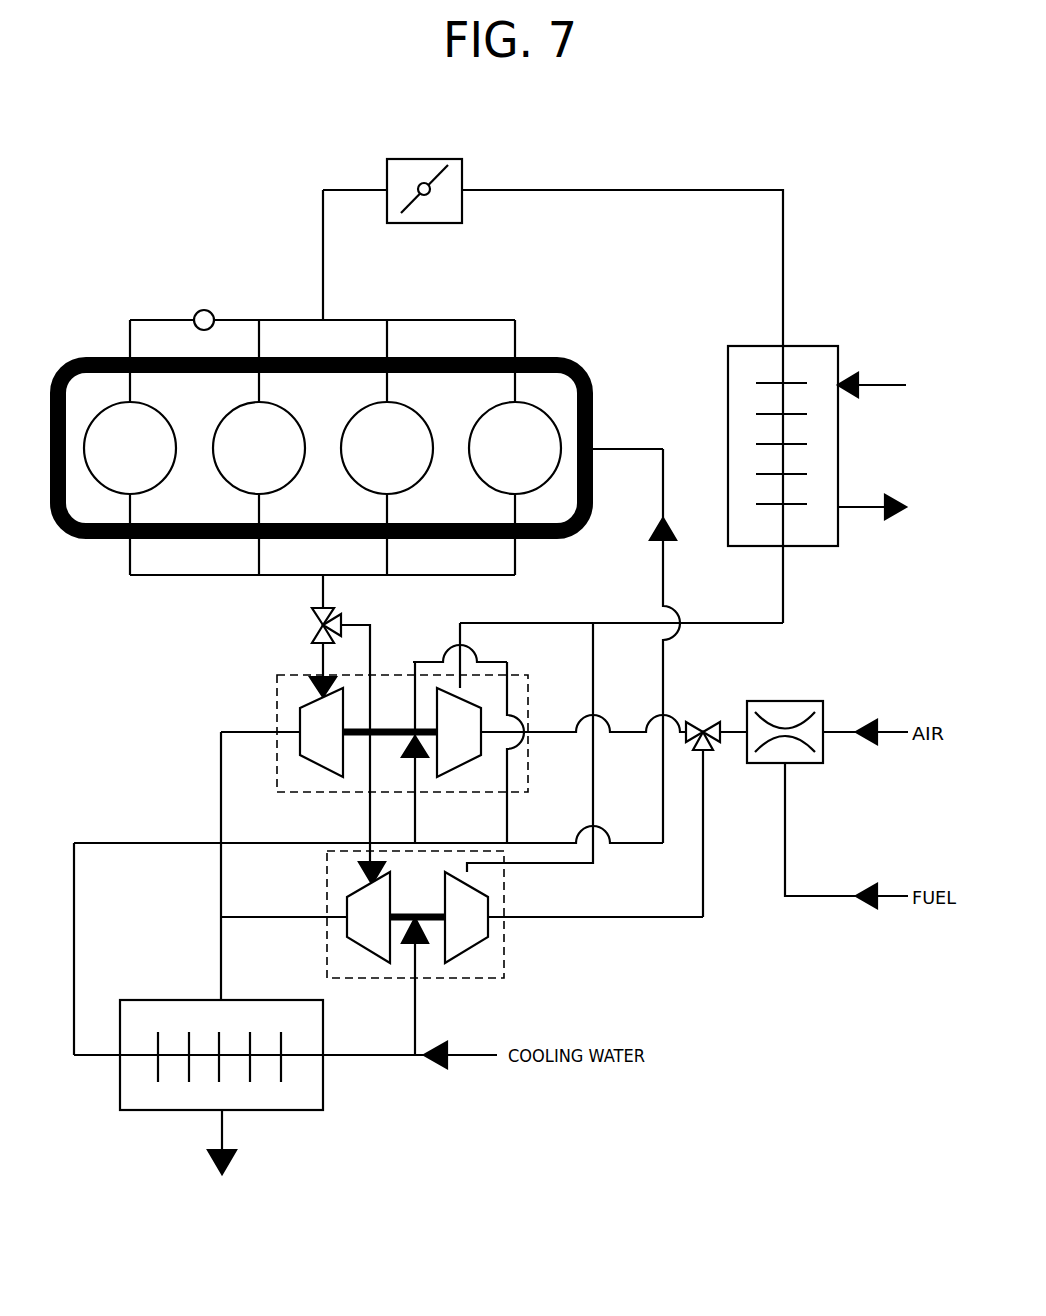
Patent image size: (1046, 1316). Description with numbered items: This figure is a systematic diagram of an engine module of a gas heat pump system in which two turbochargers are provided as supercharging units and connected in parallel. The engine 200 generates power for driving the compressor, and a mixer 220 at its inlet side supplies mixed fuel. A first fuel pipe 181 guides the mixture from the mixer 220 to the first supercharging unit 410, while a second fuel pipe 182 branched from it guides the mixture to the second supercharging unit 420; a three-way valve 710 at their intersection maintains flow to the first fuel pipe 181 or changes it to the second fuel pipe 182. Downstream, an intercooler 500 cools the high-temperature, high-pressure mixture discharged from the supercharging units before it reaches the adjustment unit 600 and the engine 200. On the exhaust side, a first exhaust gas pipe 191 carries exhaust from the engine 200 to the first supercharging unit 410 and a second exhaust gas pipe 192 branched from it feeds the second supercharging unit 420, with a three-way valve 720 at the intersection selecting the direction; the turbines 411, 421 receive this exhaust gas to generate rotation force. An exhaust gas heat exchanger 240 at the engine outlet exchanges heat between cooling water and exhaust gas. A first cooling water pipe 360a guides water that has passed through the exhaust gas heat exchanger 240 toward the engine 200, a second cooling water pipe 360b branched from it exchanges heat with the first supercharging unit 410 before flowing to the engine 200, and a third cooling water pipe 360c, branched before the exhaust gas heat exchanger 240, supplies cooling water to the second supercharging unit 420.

The engine 200 is at (95, 542).
The adjustment unit 600 is at (423, 159).
The intercooler 500 is at (810, 346).
The first exhaust gas pipe 191 is at (320, 599).
The three-way valve 720 is at (342, 622).
The second exhaust gas pipe 192 is at (372, 637).
The first supercharging unit 410 is at (277, 695).
The turbine 411 is at (322, 766).
The second cooling water pipe 360b is at (415, 813).
The second supercharging unit 420 is at (505, 948).
The turbine 421 is at (355, 930).
The first fuel pipe 181 is at (682, 728).
The three-way valve 710 is at (716, 742).
The second fuel pipe 182 is at (705, 866).
The mixer 220 is at (784, 701).
The exhaust gas heat exchanger 240 is at (273, 1112).
The first cooling water pipe 360a is at (74, 1030).
The third cooling water pipe 360c is at (415, 1027).